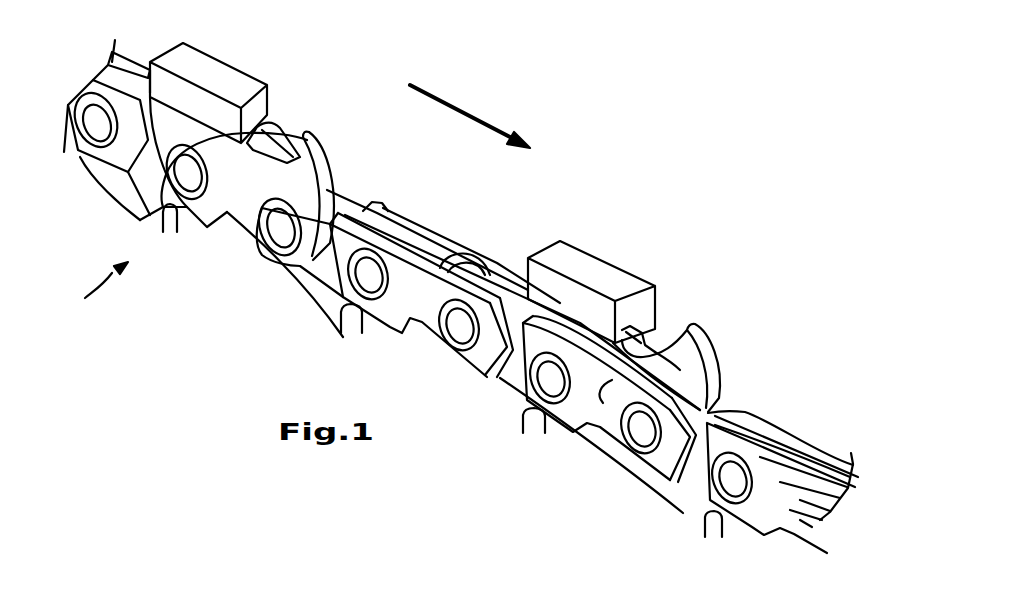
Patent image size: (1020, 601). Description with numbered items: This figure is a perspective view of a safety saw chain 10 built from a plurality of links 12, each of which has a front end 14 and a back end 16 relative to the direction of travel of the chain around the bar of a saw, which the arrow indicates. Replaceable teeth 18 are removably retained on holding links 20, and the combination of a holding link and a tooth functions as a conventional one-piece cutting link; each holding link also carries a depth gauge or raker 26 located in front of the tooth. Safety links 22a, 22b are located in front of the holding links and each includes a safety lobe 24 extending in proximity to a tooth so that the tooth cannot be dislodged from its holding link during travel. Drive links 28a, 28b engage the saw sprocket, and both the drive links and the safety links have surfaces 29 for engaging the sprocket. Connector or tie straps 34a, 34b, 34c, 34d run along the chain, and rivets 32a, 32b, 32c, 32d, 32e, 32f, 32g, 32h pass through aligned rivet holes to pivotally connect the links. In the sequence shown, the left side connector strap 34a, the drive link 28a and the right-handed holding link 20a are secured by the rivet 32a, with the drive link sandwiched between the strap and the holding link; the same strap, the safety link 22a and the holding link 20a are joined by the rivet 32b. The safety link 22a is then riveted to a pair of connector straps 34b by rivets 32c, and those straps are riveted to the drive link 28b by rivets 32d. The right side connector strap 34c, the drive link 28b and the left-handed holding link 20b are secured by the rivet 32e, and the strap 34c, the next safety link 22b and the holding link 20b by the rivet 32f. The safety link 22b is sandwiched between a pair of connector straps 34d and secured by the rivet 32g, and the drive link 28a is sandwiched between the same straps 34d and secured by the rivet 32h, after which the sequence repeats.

The safety saw chain 10 is at (731, 217).
The links 12 is at (103, 296).
The front end 14 is at (402, 230).
The back end 16 is at (276, 137).
The replaceable teeth 18 is at (200, 70).
The holding links 20 is at (695, 378).
The right-handed holding link 20a is at (316, 174).
The left-handed holding link 20b is at (693, 380).
The safety link 22a is at (307, 283).
The safety link 22b is at (682, 502).
The safety lobe 24 is at (165, 213).
The depth gauge 26 is at (306, 134).
The drive link 28a is at (133, 182).
The drive link 28b is at (507, 390).
The surfaces 29 is at (170, 226).
The rivet 32a is at (190, 183).
The rivet 32b is at (278, 228).
The rivets 32c is at (365, 275).
The rivets 32d is at (460, 328).
The rivet 32e is at (548, 380).
The rivet 32f is at (644, 427).
The rivet 32g is at (733, 483).
The rivet 32h is at (97, 120).
The left side connector strap 34a is at (130, 67).
The connector straps 34b is at (427, 287).
The right side connector strap 34c is at (603, 403).
The connector straps 34d is at (795, 473).